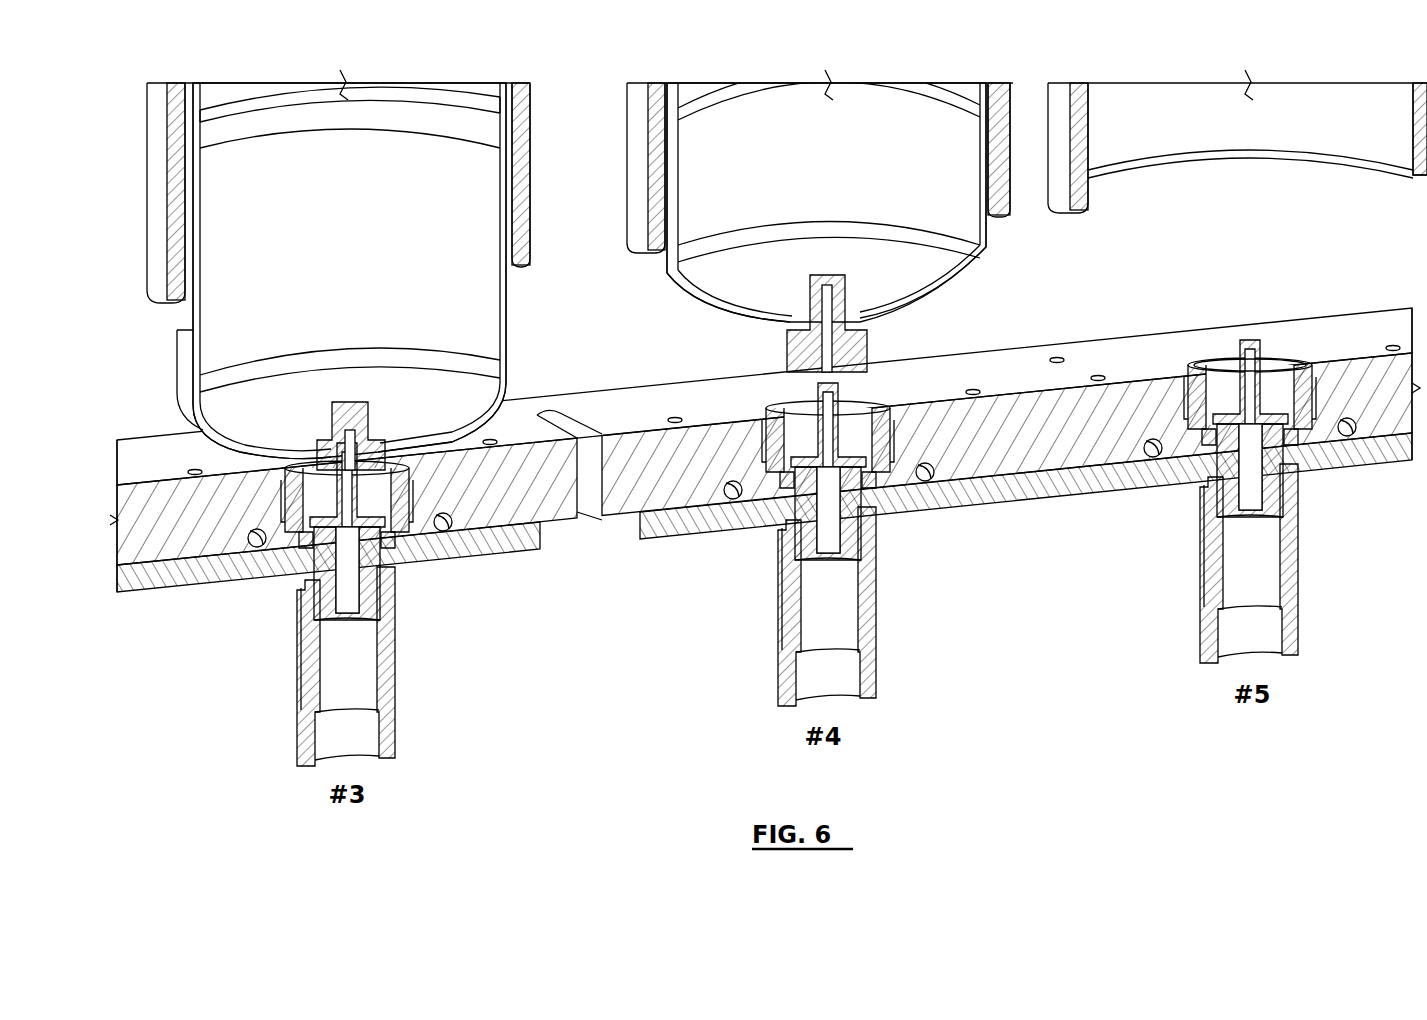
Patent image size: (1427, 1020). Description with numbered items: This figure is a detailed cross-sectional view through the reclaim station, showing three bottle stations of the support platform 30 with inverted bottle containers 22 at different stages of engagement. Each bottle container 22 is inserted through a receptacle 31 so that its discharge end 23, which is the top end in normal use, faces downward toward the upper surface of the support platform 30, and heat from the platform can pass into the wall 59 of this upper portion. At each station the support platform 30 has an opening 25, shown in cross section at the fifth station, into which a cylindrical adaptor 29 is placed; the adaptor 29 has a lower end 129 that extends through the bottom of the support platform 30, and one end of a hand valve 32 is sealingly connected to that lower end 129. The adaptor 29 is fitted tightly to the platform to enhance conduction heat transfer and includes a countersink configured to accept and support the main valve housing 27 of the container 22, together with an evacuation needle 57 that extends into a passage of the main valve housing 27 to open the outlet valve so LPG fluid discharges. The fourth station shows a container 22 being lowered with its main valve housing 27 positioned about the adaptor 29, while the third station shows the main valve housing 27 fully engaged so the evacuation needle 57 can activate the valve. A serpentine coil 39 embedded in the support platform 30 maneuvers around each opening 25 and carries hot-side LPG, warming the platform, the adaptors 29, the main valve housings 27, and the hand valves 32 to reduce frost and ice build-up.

The bottle container 22 is at (329, 208).
The discharge end 23 is at (248, 420).
The opening 25 is at (1220, 338).
The main valve housing 27 is at (372, 443).
The cylindrical adaptor 29 is at (855, 417).
The support platform 30 is at (608, 421).
The receptacle 31 is at (650, 210).
The hand valve 32 is at (396, 637).
The coil 39 is at (250, 548).
The evacuation needle 57 is at (334, 438).
The wall 59 is at (177, 330).
The lower end 129 is at (1233, 482).